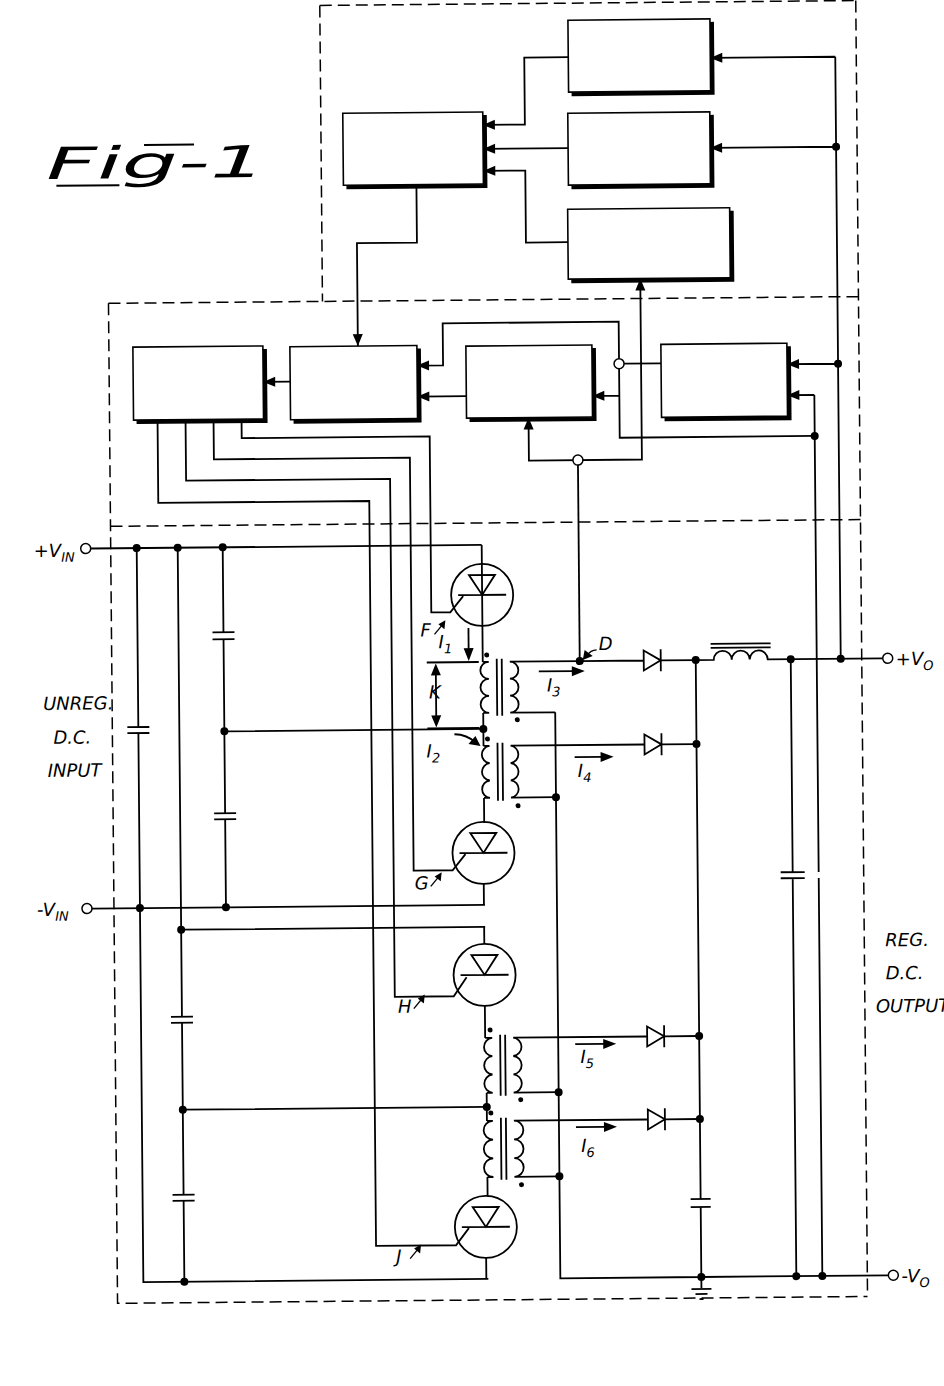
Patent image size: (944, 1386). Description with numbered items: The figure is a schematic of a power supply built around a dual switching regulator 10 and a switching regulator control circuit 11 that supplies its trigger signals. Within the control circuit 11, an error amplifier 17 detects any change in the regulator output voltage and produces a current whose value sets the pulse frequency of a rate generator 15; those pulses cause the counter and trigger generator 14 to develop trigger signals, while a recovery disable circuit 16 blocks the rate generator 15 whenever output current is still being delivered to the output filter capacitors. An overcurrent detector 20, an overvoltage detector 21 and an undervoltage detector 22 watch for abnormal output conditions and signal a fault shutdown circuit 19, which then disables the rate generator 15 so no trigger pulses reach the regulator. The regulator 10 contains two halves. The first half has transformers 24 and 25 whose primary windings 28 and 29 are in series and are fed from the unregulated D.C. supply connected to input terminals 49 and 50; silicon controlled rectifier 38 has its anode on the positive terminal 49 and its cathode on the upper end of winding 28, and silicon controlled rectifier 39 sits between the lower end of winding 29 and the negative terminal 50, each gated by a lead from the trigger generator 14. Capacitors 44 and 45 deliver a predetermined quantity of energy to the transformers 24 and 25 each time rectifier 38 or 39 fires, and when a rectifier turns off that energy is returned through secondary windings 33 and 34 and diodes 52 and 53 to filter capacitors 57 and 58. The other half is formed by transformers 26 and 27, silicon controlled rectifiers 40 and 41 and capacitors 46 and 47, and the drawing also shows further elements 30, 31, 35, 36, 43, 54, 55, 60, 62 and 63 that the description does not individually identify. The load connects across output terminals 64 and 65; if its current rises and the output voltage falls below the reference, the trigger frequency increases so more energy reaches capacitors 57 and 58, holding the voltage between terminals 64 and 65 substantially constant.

The dual switching regulator 10 is at (863, 526).
The switching regulator control circuit 11 is at (863, 318).
The counter and trigger generator 14 is at (266, 332).
The rate generator 15 is at (418, 333).
The recovery disable circuit 16 is at (596, 334).
The error amplifier 17 is at (792, 334).
The fault shutdown circuit 19 is at (488, 100).
The overcurrent detector 20 is at (722, 210).
The overvoltage detector 21 is at (716, 22).
The undervoltage detector 22 is at (715, 115).
The transformer 24 is at (507, 656).
The transformer 25 is at (515, 731).
The transformer 26 is at (507, 1033).
The transformer 27 is at (515, 1107).
The primary winding 28 is at (478, 690).
The primary winding 29 is at (478, 778).
The primary winding 30 is at (480, 1068).
The primary winding 31 is at (480, 1151).
The secondary winding 33 is at (521, 690).
The secondary winding 34 is at (521, 768).
The secondary winding 35 is at (519, 1058).
The secondary winding 36 is at (519, 1144).
The silicon controlled rectifier 38 is at (504, 577).
The silicon controlled rectifier 39 is at (508, 873).
The silicon controlled rectifier 40 is at (518, 951).
The silicon controlled rectifier 41 is at (518, 1209).
The input filter capacitor 43 is at (162, 707).
The capacitor 44 is at (228, 640).
The capacitor 45 is at (236, 814).
The capacitor 46 is at (193, 1020).
The capacitor 47 is at (193, 1198).
The positive input terminal 49 is at (91, 540).
The negative input terminal 50 is at (90, 909).
The diode 52 is at (659, 650).
The diode 53 is at (657, 736).
The rectifier diode 54 is at (655, 1028).
The rectifier diode 55 is at (650, 1132).
The filter capacitor 57 is at (688, 1204).
The filter capacitor 58 is at (782, 882).
The output filter inductor 60 is at (757, 670).
The node 62 is at (576, 466).
The node 63 is at (620, 370).
The output terminal 64 is at (889, 657).
The output terminal 65 is at (888, 1284).